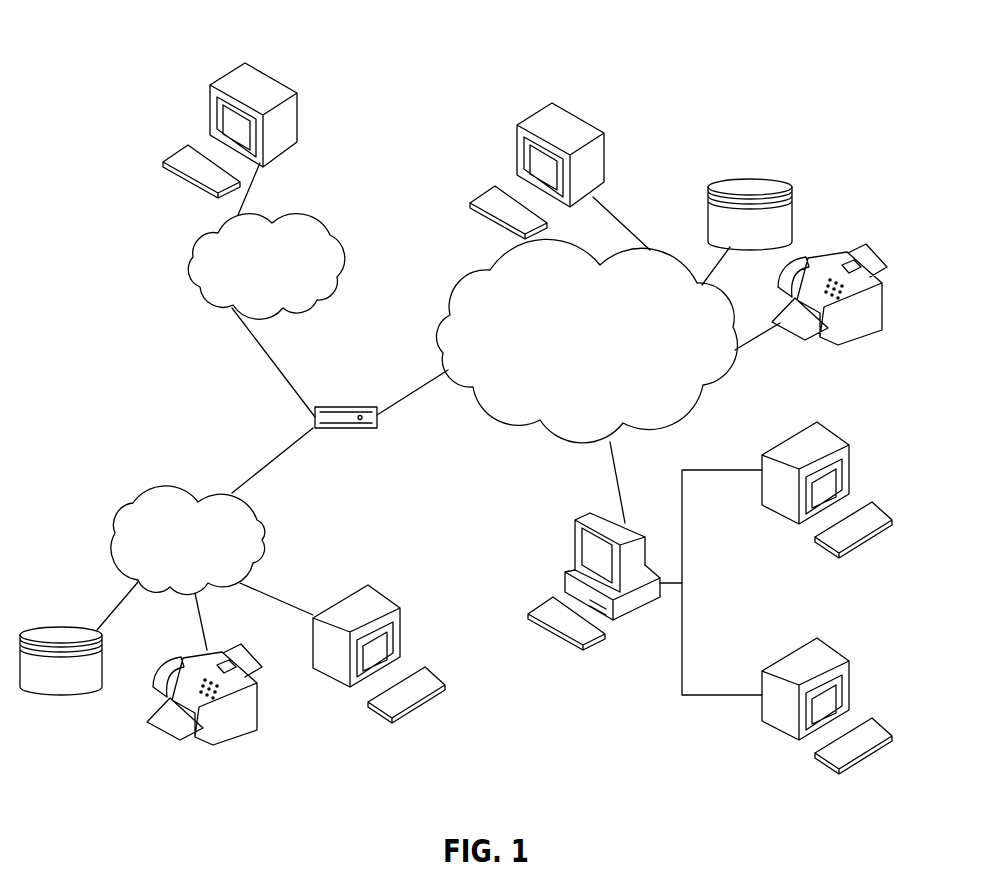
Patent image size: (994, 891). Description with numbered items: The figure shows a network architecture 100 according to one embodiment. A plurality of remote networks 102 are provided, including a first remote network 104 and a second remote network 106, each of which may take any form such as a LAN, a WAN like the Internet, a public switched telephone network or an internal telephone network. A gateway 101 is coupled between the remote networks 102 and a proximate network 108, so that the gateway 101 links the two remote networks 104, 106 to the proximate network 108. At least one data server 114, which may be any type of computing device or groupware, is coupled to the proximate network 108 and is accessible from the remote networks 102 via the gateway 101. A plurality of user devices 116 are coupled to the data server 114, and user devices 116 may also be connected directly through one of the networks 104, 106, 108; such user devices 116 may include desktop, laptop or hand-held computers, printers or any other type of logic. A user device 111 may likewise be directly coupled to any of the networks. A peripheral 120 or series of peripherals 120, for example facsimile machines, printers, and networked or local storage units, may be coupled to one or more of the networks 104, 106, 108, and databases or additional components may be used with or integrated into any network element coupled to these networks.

The architecture 100 is at (140, 45).
The gateway 101 is at (323, 407).
The remote networks 102 is at (170, 329).
The first remote network 104 is at (117, 514).
The second remote network 106 is at (338, 236).
The proximate network 108 is at (693, 410).
The user device 111 is at (604, 138).
The data server 114 is at (576, 538).
The user devices 116 is at (297, 104).
The peripheral 120 is at (790, 188).